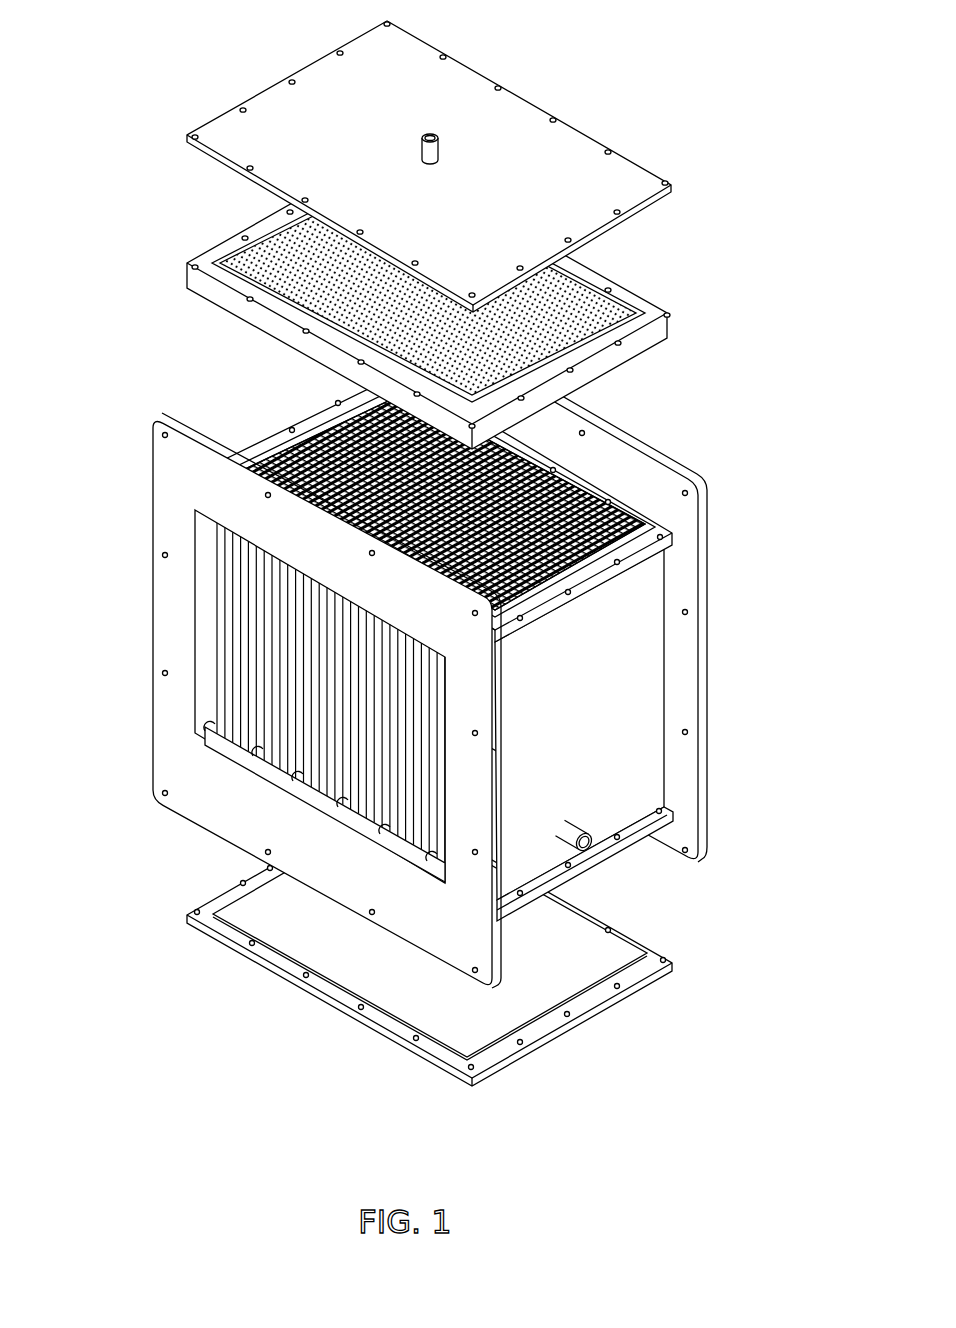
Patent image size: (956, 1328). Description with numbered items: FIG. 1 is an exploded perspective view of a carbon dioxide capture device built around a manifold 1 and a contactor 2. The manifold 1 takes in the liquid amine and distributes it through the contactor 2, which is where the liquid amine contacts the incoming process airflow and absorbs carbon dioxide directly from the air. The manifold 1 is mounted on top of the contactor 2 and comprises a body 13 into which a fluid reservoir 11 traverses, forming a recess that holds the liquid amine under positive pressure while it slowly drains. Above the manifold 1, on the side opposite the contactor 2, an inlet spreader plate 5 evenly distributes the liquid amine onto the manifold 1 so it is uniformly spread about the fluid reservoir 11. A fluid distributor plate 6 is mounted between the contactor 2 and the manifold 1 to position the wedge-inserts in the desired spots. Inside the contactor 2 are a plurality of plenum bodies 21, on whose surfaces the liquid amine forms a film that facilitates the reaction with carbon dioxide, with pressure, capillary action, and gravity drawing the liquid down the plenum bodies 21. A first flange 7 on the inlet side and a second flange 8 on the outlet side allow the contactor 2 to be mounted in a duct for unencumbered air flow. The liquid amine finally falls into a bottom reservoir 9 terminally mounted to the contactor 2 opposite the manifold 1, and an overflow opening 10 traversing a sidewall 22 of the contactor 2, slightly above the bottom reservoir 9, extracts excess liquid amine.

The manifold 1 is at (168, 268).
The contactor 2 is at (88, 554).
The inlet spreader plate 5 is at (387, 202).
The fluid distributor plate 6 is at (318, 428).
The first flange 7 is at (324, 560).
The second flange 8 is at (604, 482).
The bottom reservoir 9 is at (587, 882).
The overflow opening 10 is at (578, 829).
The fluid reservoir 11 is at (597, 288).
The body 13 is at (636, 352).
The plenum bodies 21 is at (209, 735).
The sidewall 22 is at (578, 732).